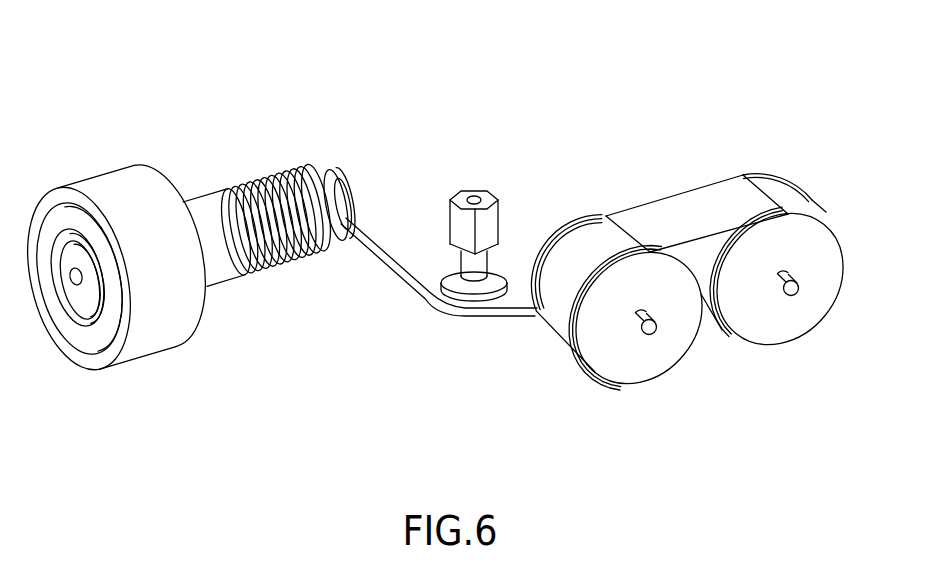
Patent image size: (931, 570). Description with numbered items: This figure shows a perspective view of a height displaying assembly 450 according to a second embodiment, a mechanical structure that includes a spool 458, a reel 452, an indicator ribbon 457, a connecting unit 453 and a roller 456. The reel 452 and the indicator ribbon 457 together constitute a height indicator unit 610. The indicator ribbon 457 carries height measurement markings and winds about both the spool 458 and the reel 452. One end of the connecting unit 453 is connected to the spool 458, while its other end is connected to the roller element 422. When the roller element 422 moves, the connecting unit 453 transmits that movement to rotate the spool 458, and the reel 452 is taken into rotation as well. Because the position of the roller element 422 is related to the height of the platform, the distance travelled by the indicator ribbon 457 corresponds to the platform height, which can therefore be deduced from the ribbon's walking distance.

The roller element 422 is at (93, 152).
The height displaying assembly 450 is at (700, 237).
The reel 452 is at (744, 180).
The connecting unit 453 is at (382, 253).
The roller 456 is at (463, 230).
The indicator ribbon 457 is at (678, 256).
The spool 458 is at (620, 368).
The height indicator unit 610 is at (719, 223).